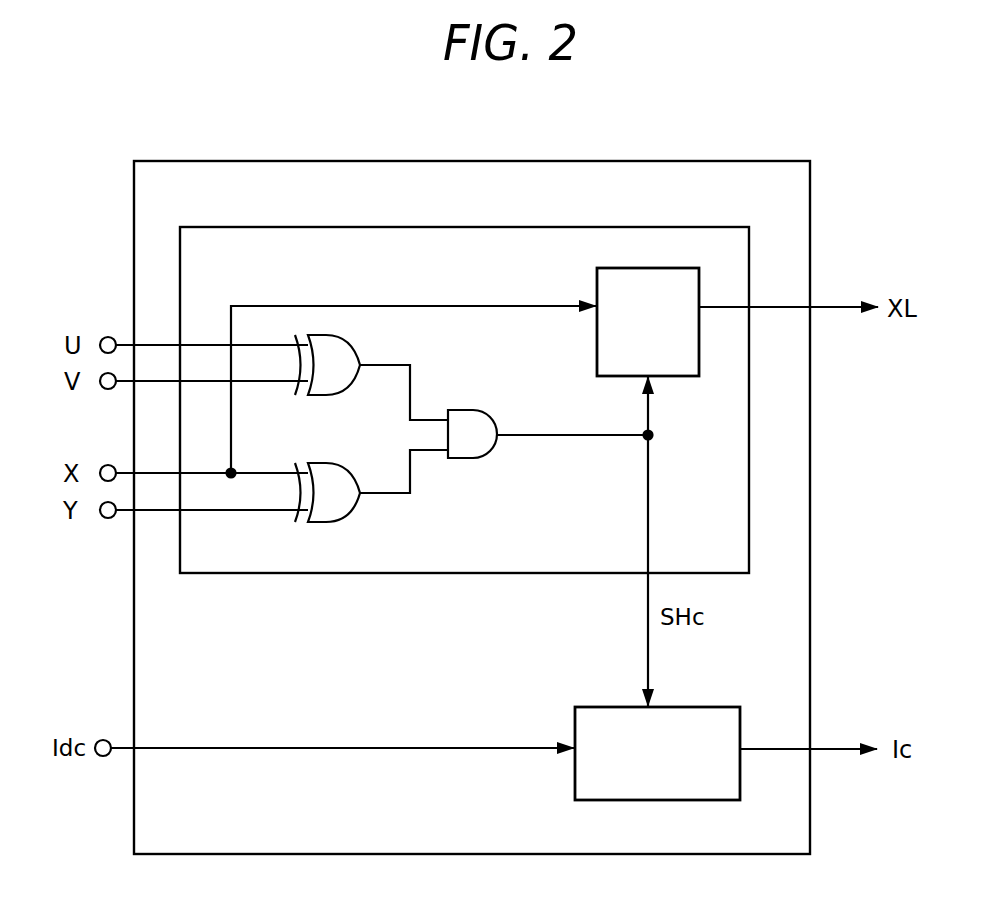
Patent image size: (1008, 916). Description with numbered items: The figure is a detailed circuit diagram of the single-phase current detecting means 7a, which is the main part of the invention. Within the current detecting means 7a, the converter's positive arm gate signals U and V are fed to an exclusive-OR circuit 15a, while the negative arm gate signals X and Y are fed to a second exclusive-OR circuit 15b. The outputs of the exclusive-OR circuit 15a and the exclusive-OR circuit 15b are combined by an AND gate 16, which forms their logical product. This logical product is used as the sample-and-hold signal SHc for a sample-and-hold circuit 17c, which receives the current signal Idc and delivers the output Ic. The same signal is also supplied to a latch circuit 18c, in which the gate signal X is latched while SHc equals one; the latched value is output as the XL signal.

The single-phase current detecting means 7a is at (403, 837).
The exclusive-OR circuit 15a is at (333, 380).
The exclusive-OR circuit 15b is at (333, 508).
The AND gate 16 is at (477, 452).
The sample-and-hold circuit 17c is at (632, 801).
The latch circuit 18c is at (675, 377).